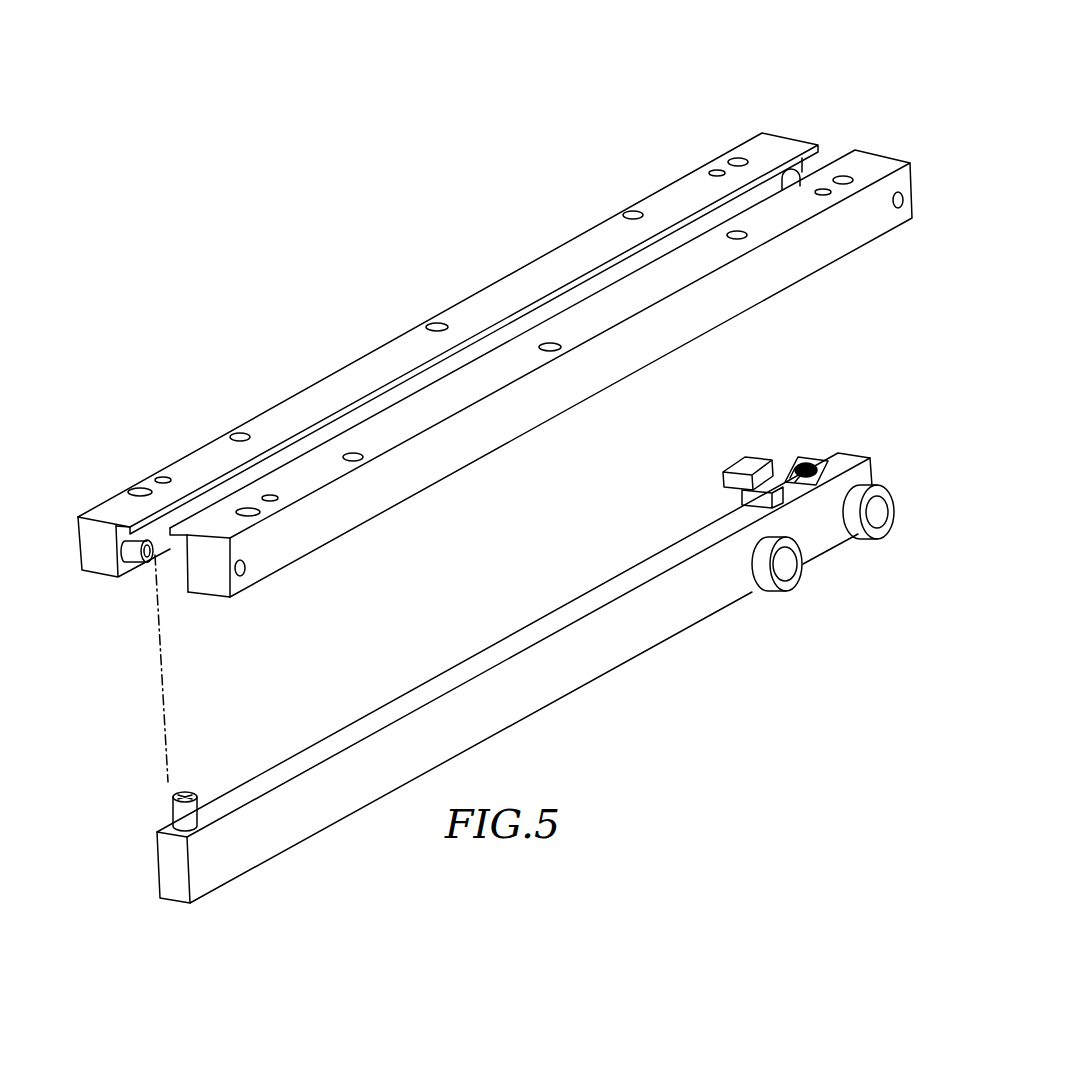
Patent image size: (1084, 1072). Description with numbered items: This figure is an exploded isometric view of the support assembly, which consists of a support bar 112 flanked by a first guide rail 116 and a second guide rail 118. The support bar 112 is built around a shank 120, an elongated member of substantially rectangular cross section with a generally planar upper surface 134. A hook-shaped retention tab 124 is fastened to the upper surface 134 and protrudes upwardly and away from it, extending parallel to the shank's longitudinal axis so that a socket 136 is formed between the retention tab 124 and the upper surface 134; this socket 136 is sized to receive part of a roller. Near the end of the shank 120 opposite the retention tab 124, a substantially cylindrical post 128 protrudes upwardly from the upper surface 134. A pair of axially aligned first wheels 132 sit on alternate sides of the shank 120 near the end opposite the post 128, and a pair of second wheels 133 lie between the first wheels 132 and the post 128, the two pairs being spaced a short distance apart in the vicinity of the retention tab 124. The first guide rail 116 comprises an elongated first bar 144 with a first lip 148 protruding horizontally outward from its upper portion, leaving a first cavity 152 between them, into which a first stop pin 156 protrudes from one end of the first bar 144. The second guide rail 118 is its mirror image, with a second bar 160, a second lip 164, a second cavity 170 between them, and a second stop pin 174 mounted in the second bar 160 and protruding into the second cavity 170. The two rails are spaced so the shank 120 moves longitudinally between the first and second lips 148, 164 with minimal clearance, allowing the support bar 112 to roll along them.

The support bar 112 is at (498, 656).
The first guide rail 116 is at (546, 347).
The second guide rail 118 is at (429, 457).
The shank 120 is at (330, 836).
The retention tab 124 is at (730, 472).
The post 128 is at (172, 806).
The first wheels 132 is at (851, 538).
The second wheels 133 is at (765, 582).
The upper surface 134 is at (230, 790).
The socket 136 is at (737, 500).
The first bar 144 is at (93, 578).
The first lip 148 is at (118, 526).
The first cavity 152 is at (147, 606).
The first stop pin 156 is at (156, 557).
The second bar 160 is at (210, 598).
The second lip 164 is at (193, 530).
The second cavity 170 is at (186, 573).
The second stop pin 174 is at (247, 571).